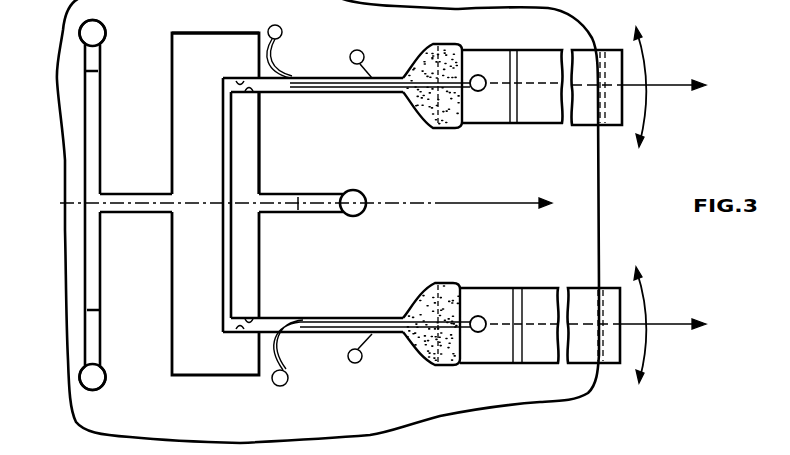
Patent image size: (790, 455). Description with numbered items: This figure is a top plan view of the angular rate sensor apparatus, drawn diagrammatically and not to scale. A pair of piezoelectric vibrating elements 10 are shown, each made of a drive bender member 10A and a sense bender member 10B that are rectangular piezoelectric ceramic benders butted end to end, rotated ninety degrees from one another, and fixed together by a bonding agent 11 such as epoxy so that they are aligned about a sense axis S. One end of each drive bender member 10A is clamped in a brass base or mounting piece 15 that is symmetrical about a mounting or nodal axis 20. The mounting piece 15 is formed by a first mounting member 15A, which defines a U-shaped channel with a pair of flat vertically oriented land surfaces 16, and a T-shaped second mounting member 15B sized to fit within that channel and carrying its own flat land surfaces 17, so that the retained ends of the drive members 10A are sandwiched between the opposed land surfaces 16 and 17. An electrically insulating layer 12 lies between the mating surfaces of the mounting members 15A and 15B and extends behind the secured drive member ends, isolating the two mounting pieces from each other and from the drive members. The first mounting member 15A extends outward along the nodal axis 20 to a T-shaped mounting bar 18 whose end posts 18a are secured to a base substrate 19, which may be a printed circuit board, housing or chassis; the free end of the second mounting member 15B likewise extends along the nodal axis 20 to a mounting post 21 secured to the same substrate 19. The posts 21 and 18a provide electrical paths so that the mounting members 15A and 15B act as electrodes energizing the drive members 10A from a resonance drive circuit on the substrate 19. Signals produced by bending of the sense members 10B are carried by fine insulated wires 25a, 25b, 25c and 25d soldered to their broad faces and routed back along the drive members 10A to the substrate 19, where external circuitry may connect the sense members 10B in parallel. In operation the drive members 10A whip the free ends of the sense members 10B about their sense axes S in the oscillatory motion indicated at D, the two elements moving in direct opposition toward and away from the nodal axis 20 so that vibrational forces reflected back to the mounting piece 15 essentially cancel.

The piezoelectric vibrating elements 10 is at (545, 40).
The drive bender member 10A is at (380, 95).
The sense bender member 10B is at (548, 125).
The bonding agent 11 is at (433, 110).
The electrically insulating layer 12 is at (226, 140).
The base or mounting piece 15 is at (205, 30).
The first mounting member 15A is at (212, 48).
The second mounting member 15B is at (260, 118).
The land surfaces 16 is at (240, 82).
The land surfaces 17 is at (247, 95).
The T-shaped mounting bar 18 is at (100, 330).
The end posts 18a is at (104, 382).
The base substrate 19 is at (517, 384).
The nodal axis 20 is at (526, 205).
The mounting post 21 is at (361, 195).
The wire 25a is at (280, 76).
The wire 25b is at (364, 70).
The wire 25c is at (306, 320).
The wire 25d is at (378, 352).
The drive direction D is at (653, 62).
The sense axis S is at (651, 206).